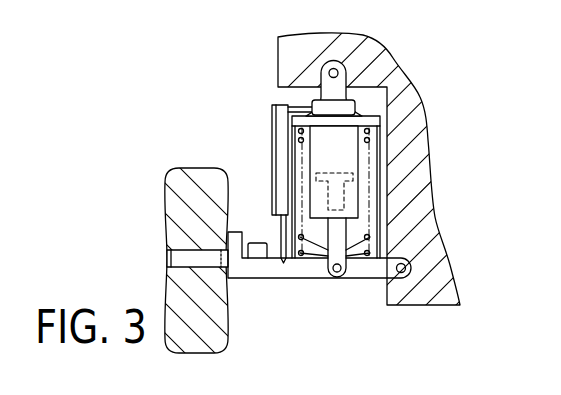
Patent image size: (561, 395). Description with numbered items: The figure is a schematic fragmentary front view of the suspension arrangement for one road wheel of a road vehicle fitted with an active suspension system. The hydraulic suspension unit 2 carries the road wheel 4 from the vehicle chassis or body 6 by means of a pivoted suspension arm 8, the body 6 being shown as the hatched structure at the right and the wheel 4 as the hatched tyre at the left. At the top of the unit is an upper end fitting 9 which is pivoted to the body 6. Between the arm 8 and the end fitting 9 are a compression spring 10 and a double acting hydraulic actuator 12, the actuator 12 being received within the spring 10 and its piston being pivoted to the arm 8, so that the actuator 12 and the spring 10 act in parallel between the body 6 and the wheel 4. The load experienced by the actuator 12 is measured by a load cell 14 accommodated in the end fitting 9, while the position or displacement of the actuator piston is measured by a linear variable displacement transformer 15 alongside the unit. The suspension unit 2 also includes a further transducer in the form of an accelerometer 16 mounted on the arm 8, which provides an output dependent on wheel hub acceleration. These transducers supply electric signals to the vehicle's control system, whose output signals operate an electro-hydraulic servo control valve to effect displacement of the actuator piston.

The hydraulic suspension unit 2 is at (243, 131).
The road wheel 4 is at (175, 203).
The vehicle chassis or body 6 is at (437, 262).
The pivoted suspension arm 8 is at (370, 268).
The upper end fitting 9 is at (367, 117).
The compression spring 10 is at (372, 152).
The double acting hydraulic actuator 12 is at (352, 203).
The load cell 14 is at (345, 108).
The linear variable displacement transformer 15 is at (277, 152).
The accelerometer 16 is at (258, 260).